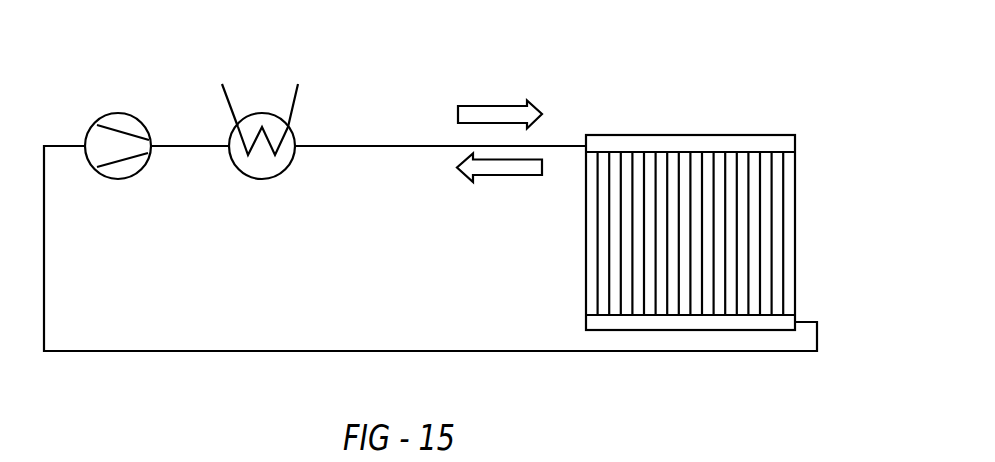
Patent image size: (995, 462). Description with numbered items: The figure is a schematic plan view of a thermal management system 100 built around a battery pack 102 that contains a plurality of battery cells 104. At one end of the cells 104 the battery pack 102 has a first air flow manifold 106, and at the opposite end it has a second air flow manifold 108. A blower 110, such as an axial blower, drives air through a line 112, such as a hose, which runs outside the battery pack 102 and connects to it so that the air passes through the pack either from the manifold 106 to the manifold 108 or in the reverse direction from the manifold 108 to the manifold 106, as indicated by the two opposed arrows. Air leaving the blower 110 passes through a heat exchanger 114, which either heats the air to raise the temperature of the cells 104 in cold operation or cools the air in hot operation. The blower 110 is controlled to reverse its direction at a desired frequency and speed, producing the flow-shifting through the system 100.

The thermal management system 100 is at (670, 73).
The battery pack 102 is at (717, 239).
The battery cells 104 is at (703, 283).
The first air flow manifold 106 is at (730, 147).
The second air flow manifold 108 is at (630, 320).
The blower 110 is at (118, 113).
The line 112 is at (312, 350).
The heat exchanger 114 is at (268, 178).